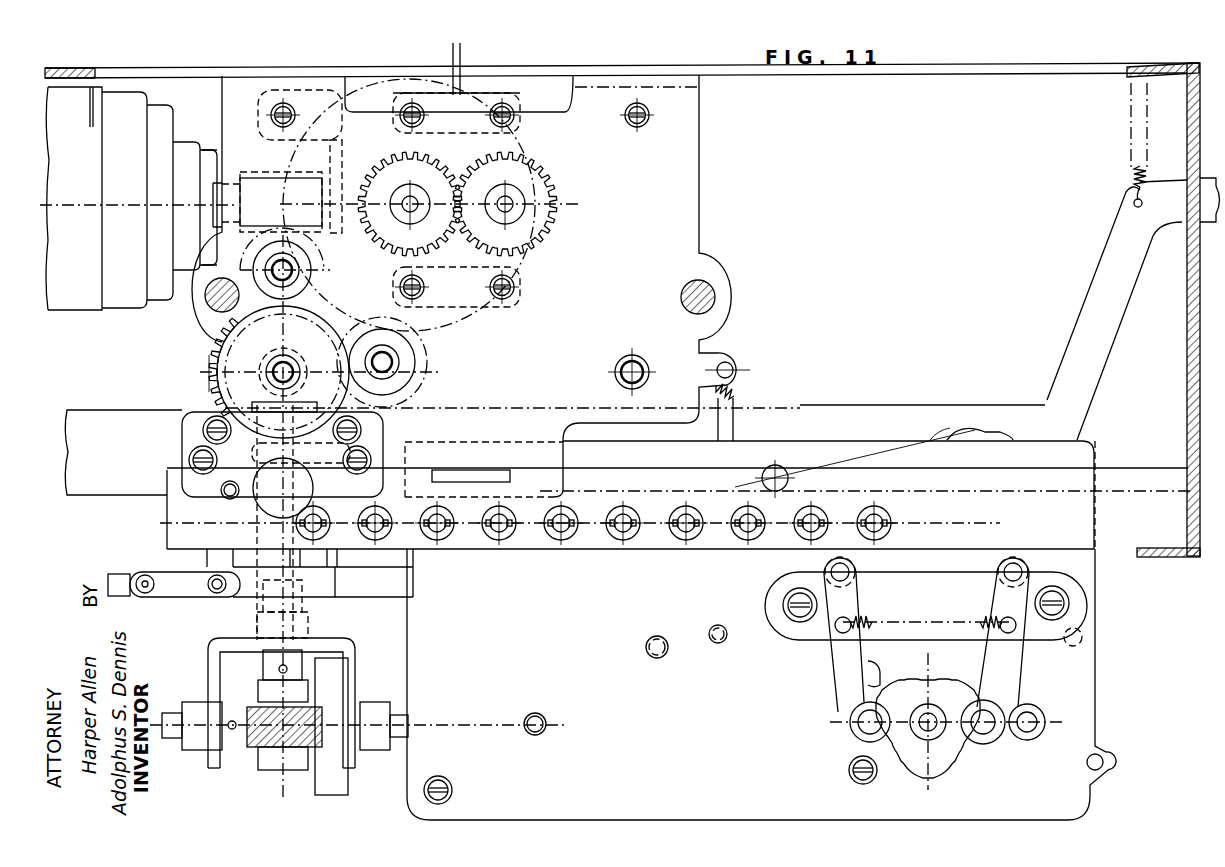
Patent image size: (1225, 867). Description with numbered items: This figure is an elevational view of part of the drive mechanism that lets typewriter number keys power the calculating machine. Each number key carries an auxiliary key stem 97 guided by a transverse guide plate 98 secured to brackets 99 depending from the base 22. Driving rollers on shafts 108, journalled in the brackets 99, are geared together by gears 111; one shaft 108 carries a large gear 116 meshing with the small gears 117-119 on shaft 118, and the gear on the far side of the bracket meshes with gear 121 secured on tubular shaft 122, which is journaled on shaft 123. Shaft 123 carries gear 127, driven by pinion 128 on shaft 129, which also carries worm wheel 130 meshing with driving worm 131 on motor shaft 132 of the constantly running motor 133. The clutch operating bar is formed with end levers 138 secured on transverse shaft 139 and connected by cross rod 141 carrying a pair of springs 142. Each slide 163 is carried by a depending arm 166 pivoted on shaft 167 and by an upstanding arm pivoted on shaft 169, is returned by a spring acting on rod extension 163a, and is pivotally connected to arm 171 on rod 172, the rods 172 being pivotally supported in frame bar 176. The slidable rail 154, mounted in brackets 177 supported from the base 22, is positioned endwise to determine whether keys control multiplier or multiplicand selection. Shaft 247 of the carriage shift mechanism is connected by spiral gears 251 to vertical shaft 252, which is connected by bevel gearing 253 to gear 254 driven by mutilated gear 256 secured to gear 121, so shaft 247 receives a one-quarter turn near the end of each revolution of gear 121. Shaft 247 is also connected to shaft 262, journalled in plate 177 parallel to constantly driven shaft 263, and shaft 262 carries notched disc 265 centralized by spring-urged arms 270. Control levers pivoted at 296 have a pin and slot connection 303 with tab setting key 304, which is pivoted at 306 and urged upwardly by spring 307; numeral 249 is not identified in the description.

The base 22 is at (1192, 66).
The auxiliary key stem 97 is at (462, 52).
The guide plate 98 is at (478, 174).
The bracket 99 is at (699, 168).
The shaft 108 is at (400, 198).
The gear 111 is at (473, 175).
The large gear 116 is at (434, 88).
The gears 117-119 is at (415, 346).
The shaft 118 is at (400, 367).
The gear 121 is at (320, 340).
The tubular shaft 122 is at (262, 369).
The shaft 123 is at (275, 360).
The gear 127 is at (206, 355).
The pinion 128 is at (299, 263).
The shaft 129 is at (300, 268).
The worm wheel 130 is at (305, 283).
The driving worm 131 is at (282, 161).
The motor shaft 132 is at (210, 150).
The motor 133 is at (58, 300).
The end lever 138 is at (708, 352).
The shaft 139 is at (624, 363).
The cross rod 141 is at (733, 369).
The spring 142 is at (738, 394).
The rail 154 is at (496, 476).
The slide 163 is at (348, 588).
The rod extension 163a is at (114, 572).
The depending arm 166 is at (210, 592).
The shaft 167 is at (224, 496).
The shaft 169 is at (716, 644).
The arm 171 is at (380, 582).
The rod 172 is at (368, 515).
The frame bar 176 is at (478, 548).
The bracket 177 is at (1095, 700).
The shaft 247 is at (172, 712).
The hole 249 is at (652, 658).
The spiral gear 251 is at (258, 752).
The vertical shaft 252 is at (272, 522).
The bevel gearing 253 is at (282, 449).
The gear 254 is at (274, 495).
The mutilated gear 256 is at (184, 373).
The shaft 262 is at (922, 730).
The shaft 263 is at (1030, 730).
The notched disc 265 is at (947, 768).
The spring-urged arm 270 is at (842, 672).
The pivot 296 is at (543, 730).
The pin and slot connection 303 is at (972, 428).
The tab setting key 304 is at (1102, 262).
The pivot 306 is at (778, 465).
The spring 307 is at (1133, 180).